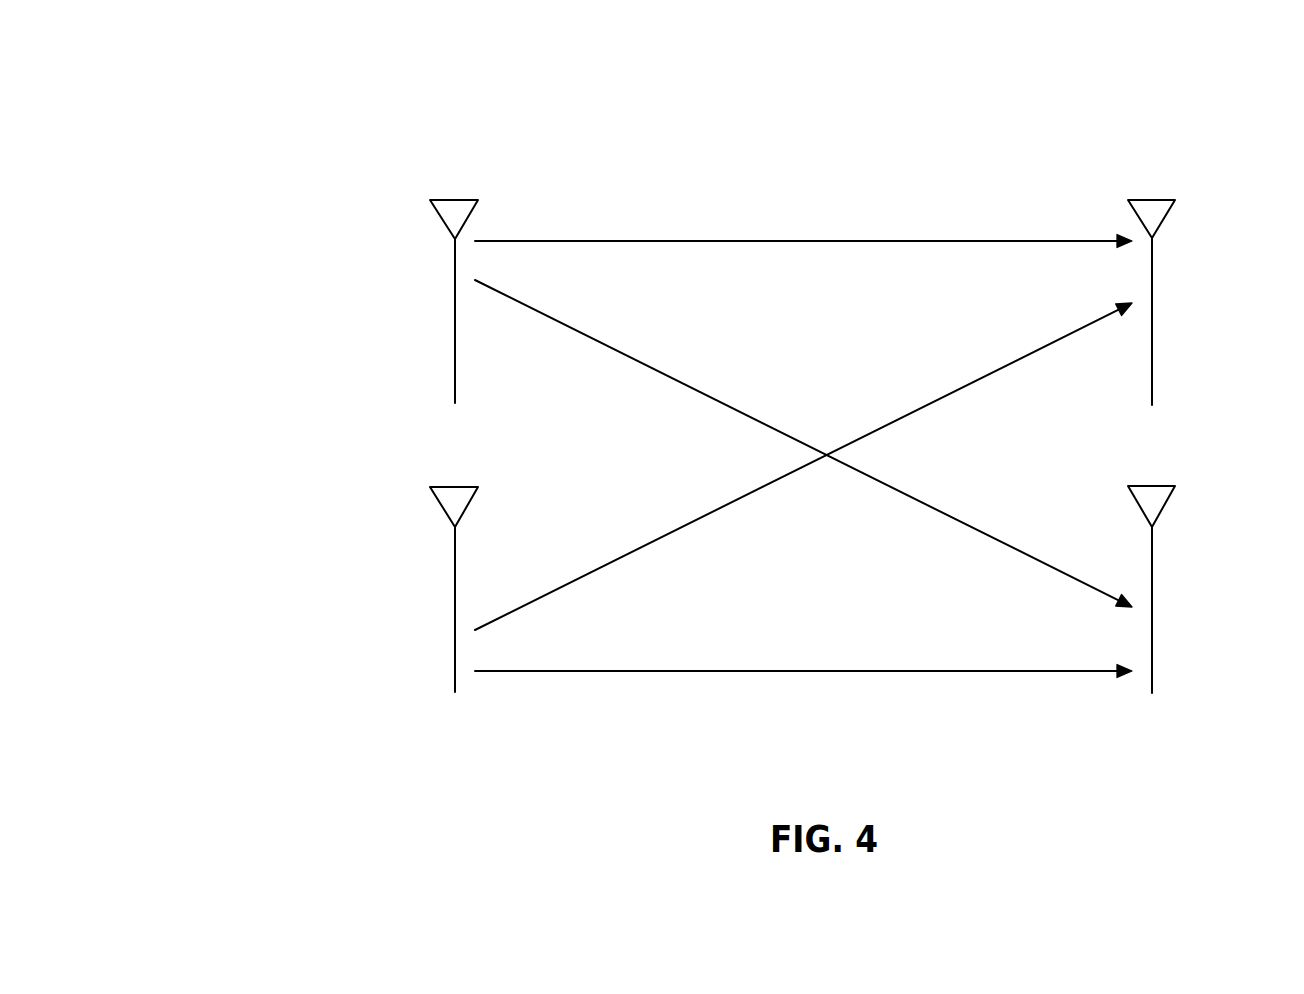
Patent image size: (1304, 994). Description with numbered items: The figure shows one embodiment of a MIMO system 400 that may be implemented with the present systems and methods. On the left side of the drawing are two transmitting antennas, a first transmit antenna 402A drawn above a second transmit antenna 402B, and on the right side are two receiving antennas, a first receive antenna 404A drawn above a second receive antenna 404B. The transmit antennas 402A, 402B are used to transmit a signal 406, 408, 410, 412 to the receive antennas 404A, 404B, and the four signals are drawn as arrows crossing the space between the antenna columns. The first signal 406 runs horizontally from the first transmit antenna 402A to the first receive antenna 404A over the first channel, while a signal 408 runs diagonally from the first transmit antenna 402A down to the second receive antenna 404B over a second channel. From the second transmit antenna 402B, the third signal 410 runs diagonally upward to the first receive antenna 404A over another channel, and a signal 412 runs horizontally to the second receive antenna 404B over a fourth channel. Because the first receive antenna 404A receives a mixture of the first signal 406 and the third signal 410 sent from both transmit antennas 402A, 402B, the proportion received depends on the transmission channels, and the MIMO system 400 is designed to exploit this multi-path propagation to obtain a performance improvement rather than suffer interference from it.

The MIMO system 400 is at (292, 100).
The first transmit antenna 402A is at (430, 202).
The second transmit antenna 402B is at (430, 488).
The first receive antenna 404A is at (1175, 200).
The second receive antenna 404B is at (1175, 486).
The first signal 406 is at (734, 240).
The signal 408 is at (680, 382).
The third signal 410 is at (637, 547).
The signal 412 is at (700, 671).